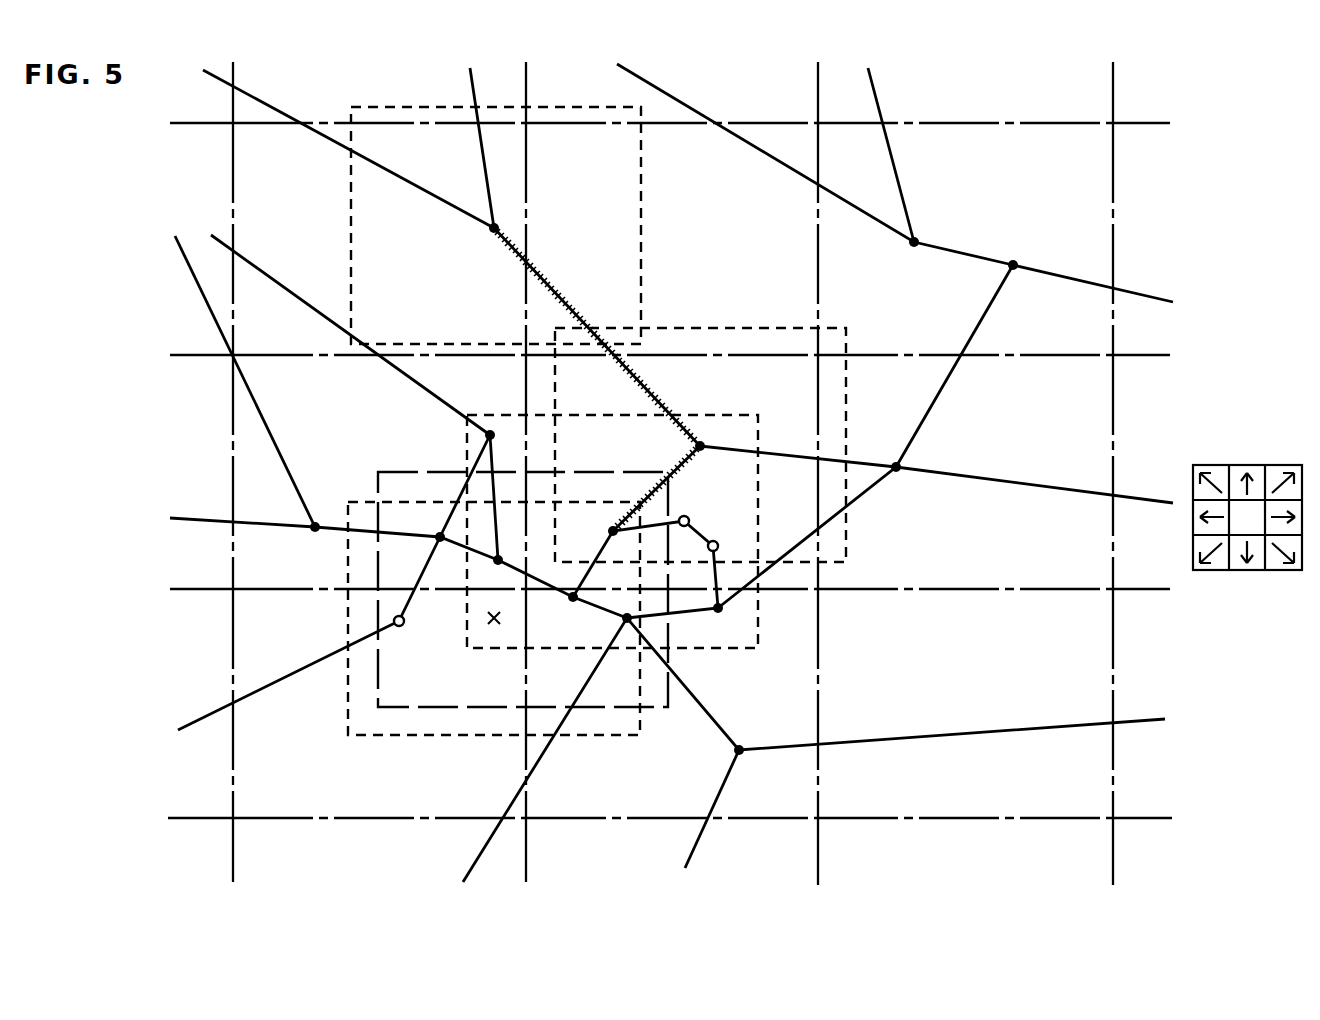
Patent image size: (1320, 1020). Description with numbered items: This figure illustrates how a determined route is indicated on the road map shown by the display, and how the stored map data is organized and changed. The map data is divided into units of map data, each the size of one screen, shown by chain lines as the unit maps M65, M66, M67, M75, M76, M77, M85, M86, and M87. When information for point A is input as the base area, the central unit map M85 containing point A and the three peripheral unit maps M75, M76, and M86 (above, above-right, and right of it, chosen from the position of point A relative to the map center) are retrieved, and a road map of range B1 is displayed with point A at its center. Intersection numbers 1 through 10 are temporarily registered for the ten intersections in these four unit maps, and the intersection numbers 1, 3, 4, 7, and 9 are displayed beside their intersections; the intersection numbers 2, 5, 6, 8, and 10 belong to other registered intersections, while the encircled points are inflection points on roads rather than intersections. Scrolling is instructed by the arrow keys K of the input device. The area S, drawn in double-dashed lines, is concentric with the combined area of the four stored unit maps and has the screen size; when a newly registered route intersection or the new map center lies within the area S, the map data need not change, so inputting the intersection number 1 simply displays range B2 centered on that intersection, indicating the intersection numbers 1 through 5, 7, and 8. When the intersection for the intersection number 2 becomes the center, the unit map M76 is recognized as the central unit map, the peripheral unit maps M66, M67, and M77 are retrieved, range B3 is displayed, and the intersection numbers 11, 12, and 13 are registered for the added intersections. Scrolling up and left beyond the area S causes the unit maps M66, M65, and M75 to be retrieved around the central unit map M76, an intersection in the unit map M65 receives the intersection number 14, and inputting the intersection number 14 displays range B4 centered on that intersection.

The intersection number 1 is at (603, 521).
The intersection number 2 is at (709, 465).
The intersection number 3 is at (611, 630).
The intersection number 4 is at (561, 612).
The intersection number 5 is at (729, 625).
The intersection number 6 is at (748, 767).
The intersection number 7 is at (488, 573).
The intersection number 8 is at (500, 441).
The intersection number 9 is at (430, 525).
The intersection number 10 is at (313, 547).
The intersection number 11 is at (903, 487).
The intersection number 12 is at (1034, 253).
The intersection number 13 is at (935, 231).
The intersection number 14 is at (477, 243).
The unit map M65 is at (411, 131).
The unit map M66 is at (785, 127).
The unit map M67 is at (1015, 132).
The unit map M75 is at (244, 488).
The unit map M76 is at (788, 577).
The unit map M77 is at (1106, 474).
The unit map M85 is at (287, 795).
The unit map M86 is at (613, 801).
The unit map M87 is at (918, 803).
The road map range B1 is at (348, 513).
The road map range B2 is at (467, 448).
The road map range B3 is at (722, 333).
The road map range B4 is at (347, 222).
The area S is at (407, 708).
The point A is at (494, 626).
The arrow keys K is at (1275, 465).